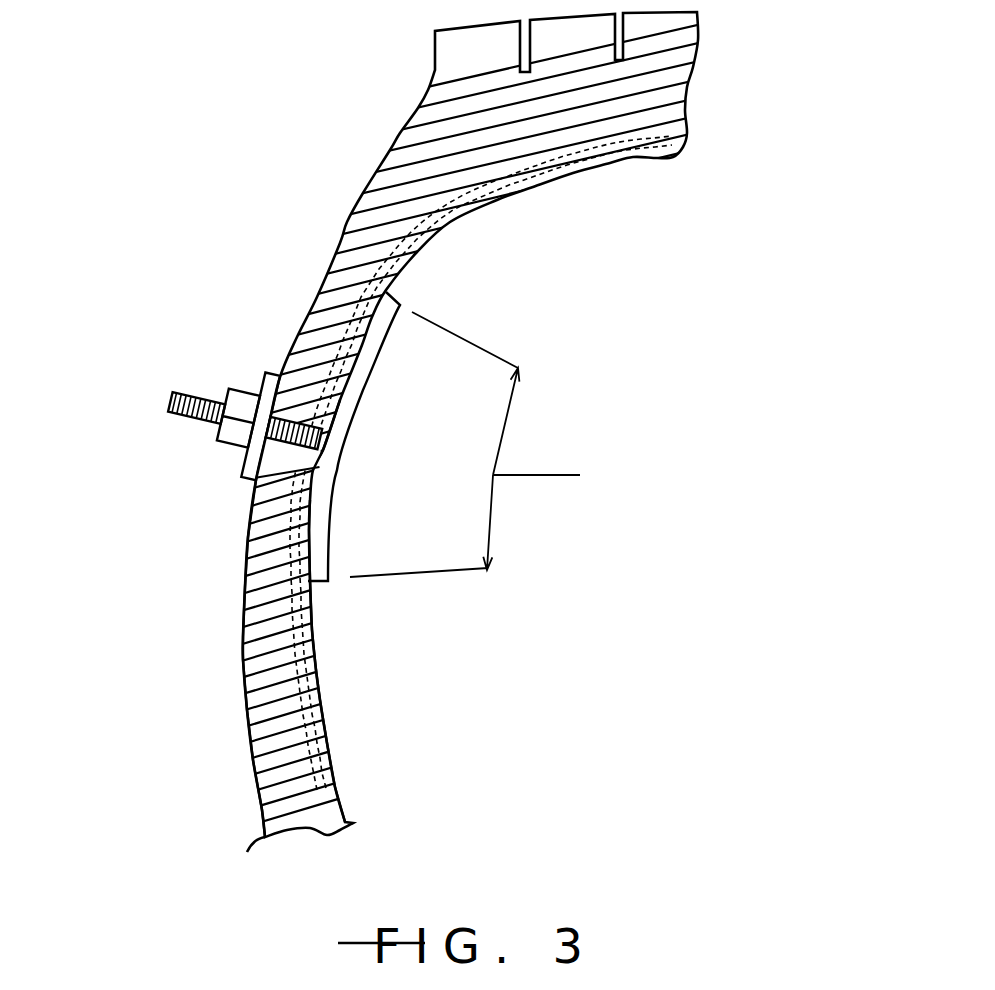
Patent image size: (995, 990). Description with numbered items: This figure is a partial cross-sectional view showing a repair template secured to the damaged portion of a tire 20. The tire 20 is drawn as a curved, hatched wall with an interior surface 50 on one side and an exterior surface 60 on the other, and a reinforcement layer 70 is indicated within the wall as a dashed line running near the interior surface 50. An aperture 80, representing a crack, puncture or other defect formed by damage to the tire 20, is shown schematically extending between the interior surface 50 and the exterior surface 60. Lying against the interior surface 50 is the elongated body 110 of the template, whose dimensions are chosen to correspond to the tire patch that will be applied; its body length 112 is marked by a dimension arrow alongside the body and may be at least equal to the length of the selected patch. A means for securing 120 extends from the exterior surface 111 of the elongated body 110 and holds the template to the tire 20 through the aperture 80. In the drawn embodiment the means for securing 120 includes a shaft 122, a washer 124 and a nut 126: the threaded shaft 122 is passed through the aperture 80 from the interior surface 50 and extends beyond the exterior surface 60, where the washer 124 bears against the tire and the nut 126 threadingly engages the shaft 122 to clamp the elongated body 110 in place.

The tire 20 is at (338, 117).
The interior surface 50 is at (320, 680).
The exterior surface 60 is at (243, 580).
The reinforcement layer 70 is at (452, 215).
The aperture 80 is at (288, 463).
The elongated body 110 is at (373, 358).
The exterior surface of the elongated body 111 is at (323, 398).
The body length 112 is at (490, 444).
The means for securing 120 is at (140, 458).
The shaft 122 is at (180, 392).
The washer 124 is at (270, 373).
The nut 126 is at (235, 388).